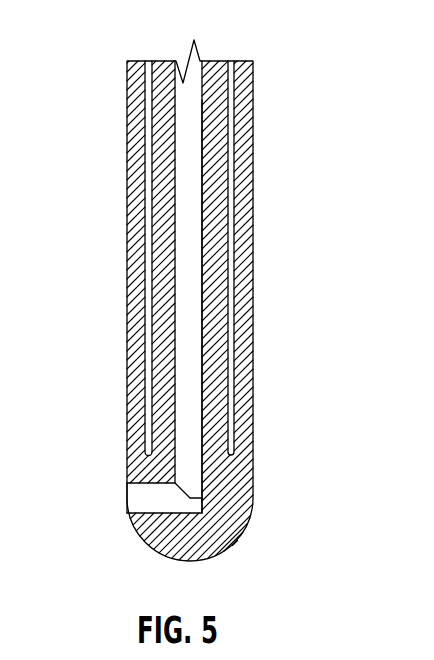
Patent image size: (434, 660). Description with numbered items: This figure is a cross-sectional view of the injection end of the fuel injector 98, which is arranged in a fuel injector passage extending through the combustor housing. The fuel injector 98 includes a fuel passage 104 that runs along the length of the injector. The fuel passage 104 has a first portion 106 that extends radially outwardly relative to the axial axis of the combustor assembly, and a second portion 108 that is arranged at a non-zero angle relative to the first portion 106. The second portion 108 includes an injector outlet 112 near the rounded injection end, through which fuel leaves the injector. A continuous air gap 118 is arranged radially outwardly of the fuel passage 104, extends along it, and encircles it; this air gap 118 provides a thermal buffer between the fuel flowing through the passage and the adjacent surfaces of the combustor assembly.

The fuel injector 98 is at (256, 390).
The fuel passage 104 is at (184, 251).
The first portion 106 is at (203, 322).
The second portion 108 is at (158, 500).
The injector outlet 112 is at (128, 492).
The continuous air gap 118 is at (147, 105).